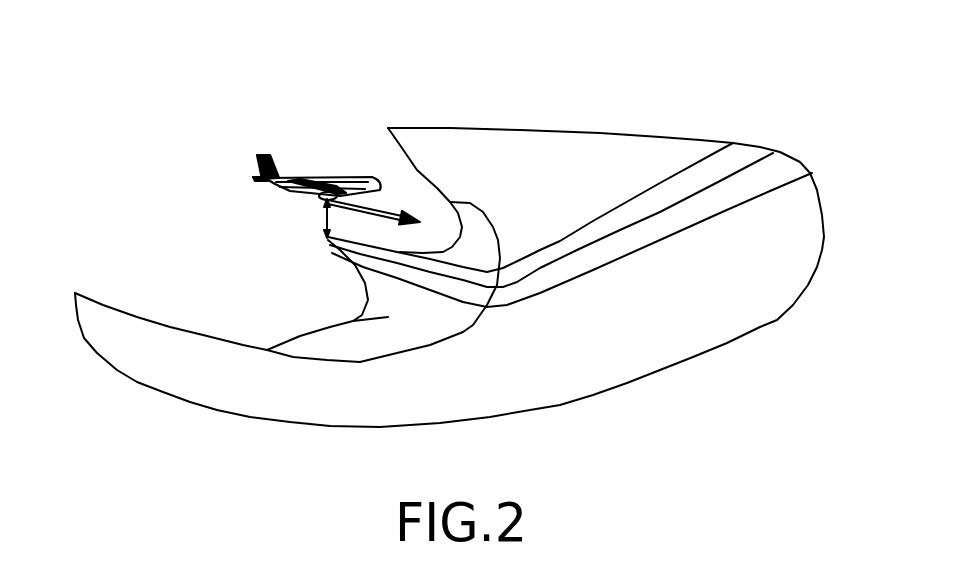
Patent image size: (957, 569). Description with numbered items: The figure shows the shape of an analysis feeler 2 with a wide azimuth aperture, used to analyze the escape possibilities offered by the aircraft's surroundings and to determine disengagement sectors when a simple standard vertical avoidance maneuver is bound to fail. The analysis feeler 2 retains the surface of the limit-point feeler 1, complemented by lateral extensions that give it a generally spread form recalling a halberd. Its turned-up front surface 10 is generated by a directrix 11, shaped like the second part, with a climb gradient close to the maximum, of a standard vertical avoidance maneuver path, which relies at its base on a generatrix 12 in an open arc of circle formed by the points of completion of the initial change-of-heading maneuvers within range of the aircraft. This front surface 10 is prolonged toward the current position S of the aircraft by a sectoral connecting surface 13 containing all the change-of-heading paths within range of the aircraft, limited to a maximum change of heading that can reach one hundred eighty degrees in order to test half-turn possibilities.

The limit-point feeler 1 is at (800, 124).
The analysis feeler 2 is at (647, 89).
The turned-up front surface 10 is at (712, 323).
The directrix 11 is at (708, 188).
The generatrix 12 is at (498, 235).
The sectoral connecting surface 13 is at (353, 321).
The current position of the aircraft S is at (327, 197).